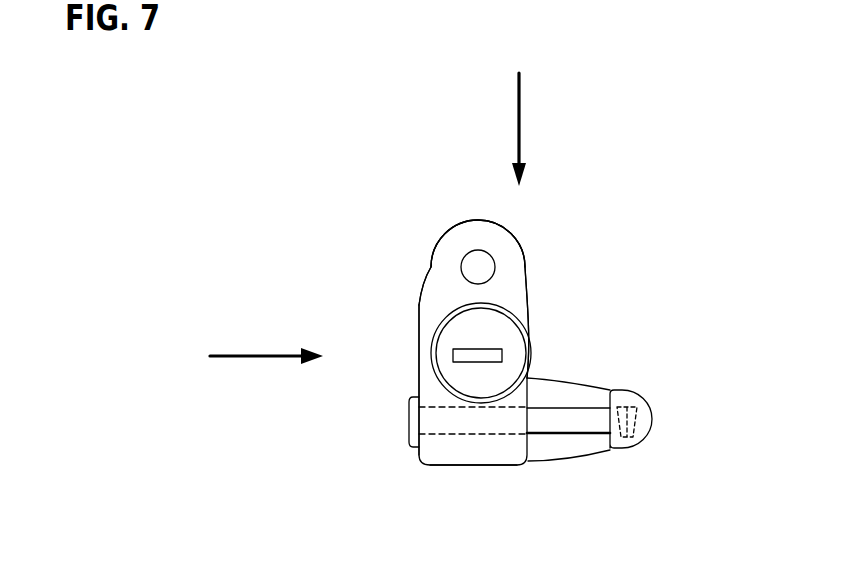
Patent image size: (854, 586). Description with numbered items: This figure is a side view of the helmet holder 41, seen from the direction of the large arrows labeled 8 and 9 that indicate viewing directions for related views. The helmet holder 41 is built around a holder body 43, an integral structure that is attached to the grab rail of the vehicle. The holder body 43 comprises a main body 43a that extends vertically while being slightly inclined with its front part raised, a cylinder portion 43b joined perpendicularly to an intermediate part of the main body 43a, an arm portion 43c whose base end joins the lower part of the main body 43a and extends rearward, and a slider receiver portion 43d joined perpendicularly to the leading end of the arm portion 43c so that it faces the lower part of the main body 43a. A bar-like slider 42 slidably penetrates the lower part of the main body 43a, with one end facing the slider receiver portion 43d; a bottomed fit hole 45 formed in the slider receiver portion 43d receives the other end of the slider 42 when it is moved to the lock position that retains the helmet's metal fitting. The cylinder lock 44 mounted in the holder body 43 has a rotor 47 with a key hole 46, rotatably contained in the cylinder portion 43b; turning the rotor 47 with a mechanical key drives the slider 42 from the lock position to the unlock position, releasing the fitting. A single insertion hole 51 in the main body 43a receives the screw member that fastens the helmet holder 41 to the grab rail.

The viewing direction arrow 8 is at (520, 109).
The viewing direction arrow 9 is at (254, 357).
The helmet holder 41 is at (446, 472).
The slider 42 is at (558, 412).
The holder body 43 is at (422, 268).
The main body 43a is at (527, 282).
The cylinder portion 43b is at (430, 367).
The arm portion 43c is at (567, 465).
The slider receiver portion 43d is at (648, 407).
The cylinder lock 44 is at (477, 412).
The fit hole 45 is at (630, 441).
The key hole 46 is at (448, 347).
The rotor 47 is at (495, 380).
The insertion hole 51 is at (465, 258).